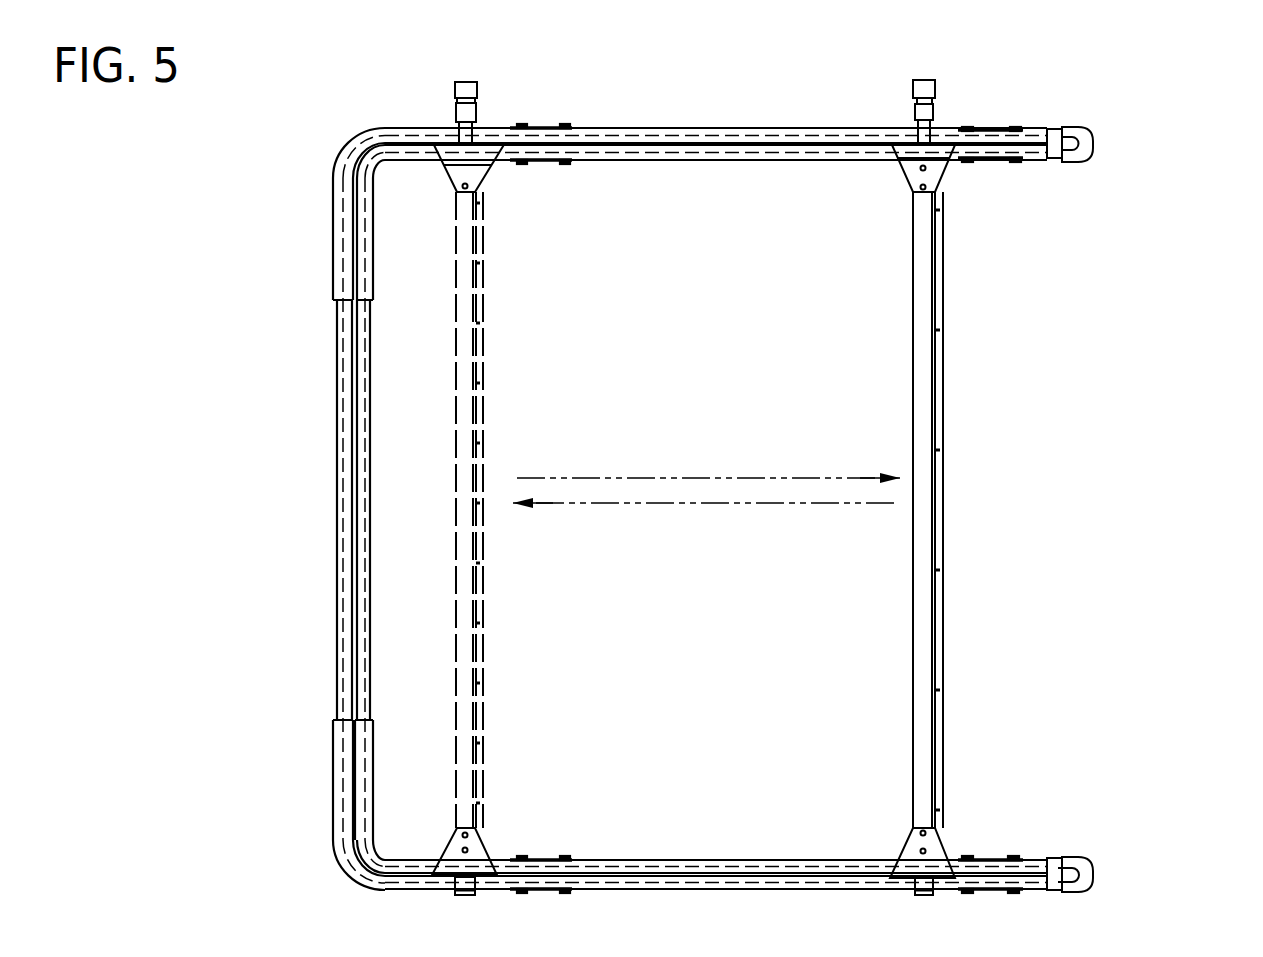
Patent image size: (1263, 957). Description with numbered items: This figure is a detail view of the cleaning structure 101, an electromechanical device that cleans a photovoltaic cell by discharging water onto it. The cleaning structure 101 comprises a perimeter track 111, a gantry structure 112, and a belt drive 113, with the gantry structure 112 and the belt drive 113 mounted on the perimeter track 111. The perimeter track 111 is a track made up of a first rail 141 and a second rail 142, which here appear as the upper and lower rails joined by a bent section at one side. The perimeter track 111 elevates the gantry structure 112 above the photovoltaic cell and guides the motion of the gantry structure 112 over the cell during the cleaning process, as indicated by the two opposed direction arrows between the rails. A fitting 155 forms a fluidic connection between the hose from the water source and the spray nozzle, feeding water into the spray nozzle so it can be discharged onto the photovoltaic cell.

The cleaning structure 101 is at (1163, 167).
The perimeter track 111 is at (686, 685).
The gantry structure 112 is at (948, 385).
The belt drive 113 is at (1012, 145).
The first rail 141 is at (715, 160).
The second rail 142 is at (725, 860).
The fitting 155 is at (936, 94).